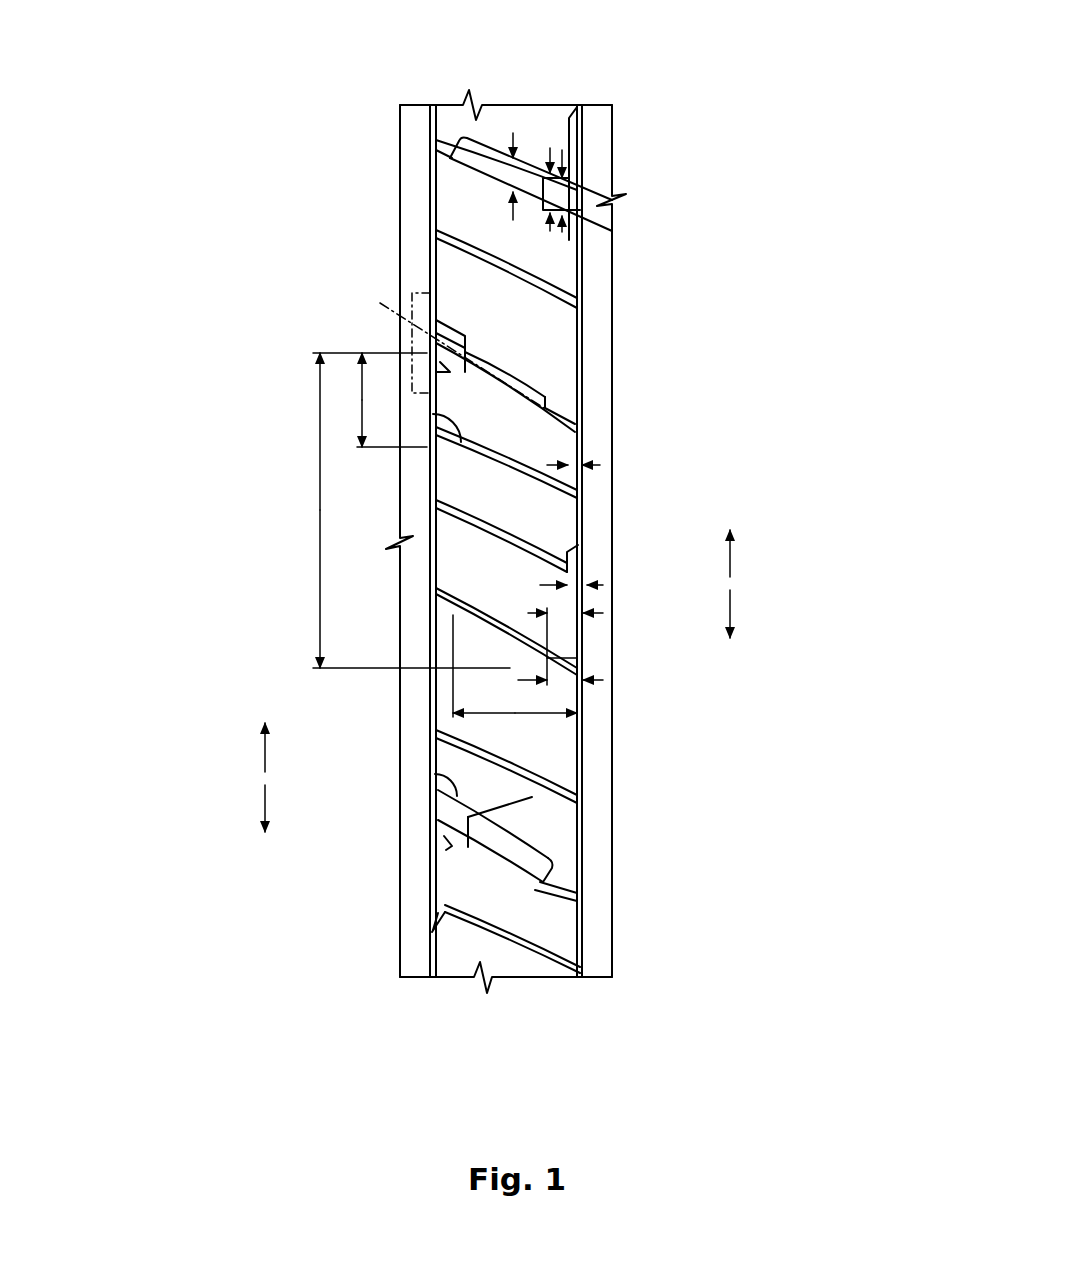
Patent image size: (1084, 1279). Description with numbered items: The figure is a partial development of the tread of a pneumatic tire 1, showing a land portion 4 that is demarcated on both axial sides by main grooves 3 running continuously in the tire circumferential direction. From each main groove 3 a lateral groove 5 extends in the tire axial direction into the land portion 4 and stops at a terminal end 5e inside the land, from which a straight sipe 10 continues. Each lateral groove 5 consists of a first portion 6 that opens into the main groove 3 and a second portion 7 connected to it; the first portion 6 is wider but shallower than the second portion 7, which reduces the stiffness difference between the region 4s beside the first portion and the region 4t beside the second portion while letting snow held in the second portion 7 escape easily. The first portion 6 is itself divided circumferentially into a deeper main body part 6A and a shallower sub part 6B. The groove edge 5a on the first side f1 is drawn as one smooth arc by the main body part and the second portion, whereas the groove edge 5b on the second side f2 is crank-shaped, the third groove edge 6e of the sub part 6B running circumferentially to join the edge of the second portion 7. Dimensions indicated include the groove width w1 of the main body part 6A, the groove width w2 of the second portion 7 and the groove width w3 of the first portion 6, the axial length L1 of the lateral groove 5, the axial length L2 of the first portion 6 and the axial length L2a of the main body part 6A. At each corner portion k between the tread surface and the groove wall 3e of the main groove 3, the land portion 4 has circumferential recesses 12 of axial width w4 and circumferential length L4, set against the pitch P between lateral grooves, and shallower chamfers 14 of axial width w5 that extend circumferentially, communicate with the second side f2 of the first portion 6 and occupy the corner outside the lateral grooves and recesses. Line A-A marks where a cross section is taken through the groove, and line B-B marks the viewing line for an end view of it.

The tire 1 is at (673, 87).
The main groove 3 is at (413, 128).
The groove wall 3e is at (430, 943).
The land portion 4 is at (535, 128).
The region adjacent to the first portion 4s is at (453, 770).
The region adjacent to the second portion 4t is at (522, 827).
The lateral groove 5 is at (477, 158).
The groove edge at the first side 5a is at (560, 917).
The groove edge at the second side 5b is at (540, 850).
The terminal end 5e is at (560, 377).
The first portion 6 is at (572, 195).
The main body part 6A is at (448, 848).
The sub part 6B is at (447, 780).
The third groove edge 6e is at (545, 790).
The second portion 7 is at (520, 862).
The sipe 10 is at (570, 412).
The circumferential recess 12 is at (573, 158).
The chamfer 14 is at (580, 330).
The corner portion k is at (422, 261).
The groove width of the main body part w1 is at (566, 206).
The groove width of the second portion w2 is at (512, 180).
The groove width of the first portion w3 is at (553, 193).
The width of the circumferential recess w4 is at (587, 583).
The width of the chamfer w5 is at (585, 467).
The length of the lateral groove L1 is at (552, 718).
The length of the first portion L2 is at (590, 682).
The length of the main body part L2a is at (590, 605).
The length of the circumferential recess L4 is at (377, 400).
The pitch P is at (404, 510).
The first side f1 is at (500, 681).
The second side f2 is at (500, 681).
The line A- A is at (380, 303).
The line B- B is at (412, 293).